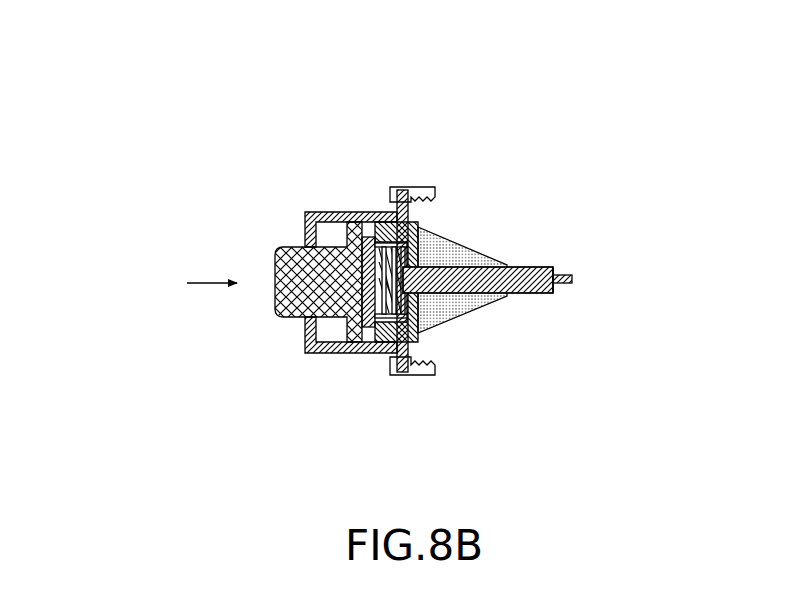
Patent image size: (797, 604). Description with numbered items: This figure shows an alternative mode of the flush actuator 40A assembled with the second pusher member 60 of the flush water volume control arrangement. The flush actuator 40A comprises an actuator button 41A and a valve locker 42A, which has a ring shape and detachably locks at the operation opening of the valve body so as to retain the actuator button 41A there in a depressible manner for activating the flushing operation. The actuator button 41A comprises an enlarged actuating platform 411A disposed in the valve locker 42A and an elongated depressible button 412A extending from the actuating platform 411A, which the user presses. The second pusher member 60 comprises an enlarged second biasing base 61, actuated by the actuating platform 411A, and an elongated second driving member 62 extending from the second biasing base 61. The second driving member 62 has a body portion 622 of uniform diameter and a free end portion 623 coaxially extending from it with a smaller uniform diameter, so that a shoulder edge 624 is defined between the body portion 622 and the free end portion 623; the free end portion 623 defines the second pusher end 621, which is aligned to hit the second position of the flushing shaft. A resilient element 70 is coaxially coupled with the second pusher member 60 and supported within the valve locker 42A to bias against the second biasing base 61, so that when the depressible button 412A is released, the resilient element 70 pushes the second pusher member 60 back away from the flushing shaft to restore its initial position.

The flush actuator 40A is at (284, 322).
The actuator button 41A is at (315, 282).
The actuating platform 411A is at (307, 350).
The depressible button 412A is at (300, 288).
The valve locker 42A is at (405, 365).
The second biasing base 61 is at (367, 212).
The resilient element 70 is at (403, 287).
The second pusher member 60 is at (562, 197).
The second driving member 62 is at (562, 238).
The second pusher end 621 is at (578, 278).
The body portion 622 is at (476, 258).
The free end portion 623 is at (568, 295).
The shoulder edge 624 is at (553, 272).